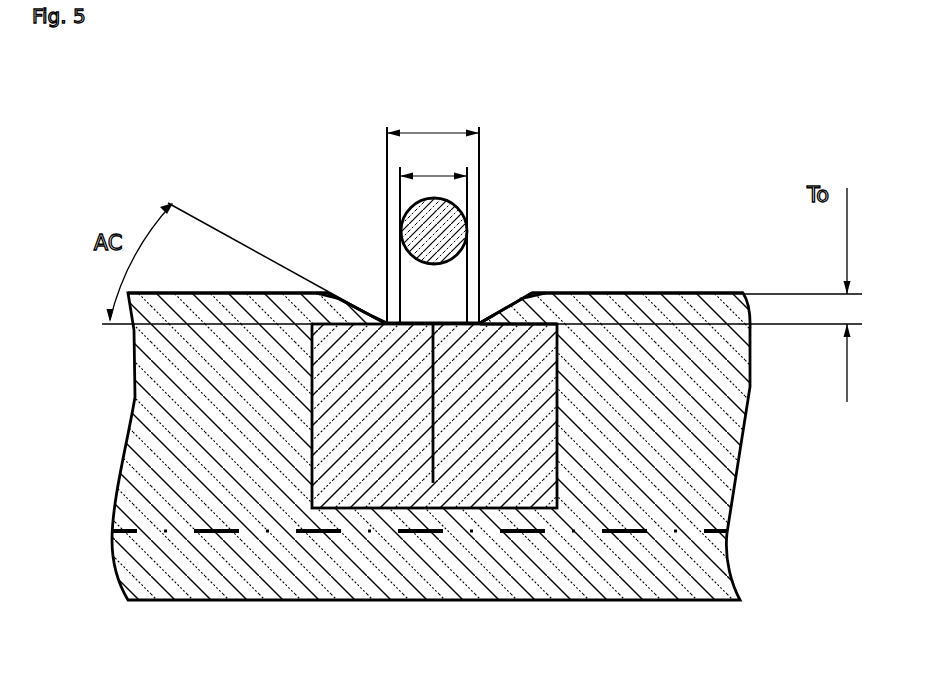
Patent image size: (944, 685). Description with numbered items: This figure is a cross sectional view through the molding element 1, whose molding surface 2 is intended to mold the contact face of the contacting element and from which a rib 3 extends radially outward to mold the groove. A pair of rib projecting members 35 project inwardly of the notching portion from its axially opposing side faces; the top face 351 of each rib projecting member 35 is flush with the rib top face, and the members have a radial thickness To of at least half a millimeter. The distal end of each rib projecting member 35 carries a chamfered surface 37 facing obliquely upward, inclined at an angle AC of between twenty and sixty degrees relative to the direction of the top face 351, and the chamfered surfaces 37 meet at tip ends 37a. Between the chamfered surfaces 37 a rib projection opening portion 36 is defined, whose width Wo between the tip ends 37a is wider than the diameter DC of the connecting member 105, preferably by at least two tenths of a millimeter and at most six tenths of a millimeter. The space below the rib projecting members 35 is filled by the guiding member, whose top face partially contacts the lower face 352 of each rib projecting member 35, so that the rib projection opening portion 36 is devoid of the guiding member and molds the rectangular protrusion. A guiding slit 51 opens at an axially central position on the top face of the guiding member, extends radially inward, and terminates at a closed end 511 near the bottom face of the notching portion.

The molding element 1 is at (162, 175).
The molding surface 2 is at (712, 530).
The rib 3 is at (682, 310).
The rib projecting member 35 is at (300, 292).
The top face 351 is at (325, 291).
The lower face 352 is at (512, 325).
The rib projection opening portion 36 is at (494, 301).
The chamfered surface 37 is at (358, 305).
The tip end 37a is at (382, 320).
The connecting member 105 is at (459, 214).
The guiding slit 51 is at (437, 433).
The closed end 511 is at (431, 495).